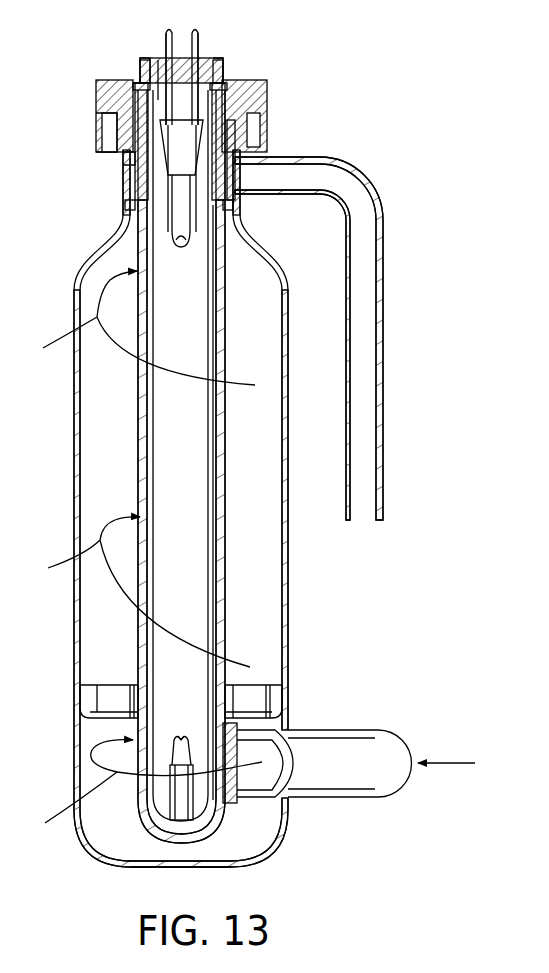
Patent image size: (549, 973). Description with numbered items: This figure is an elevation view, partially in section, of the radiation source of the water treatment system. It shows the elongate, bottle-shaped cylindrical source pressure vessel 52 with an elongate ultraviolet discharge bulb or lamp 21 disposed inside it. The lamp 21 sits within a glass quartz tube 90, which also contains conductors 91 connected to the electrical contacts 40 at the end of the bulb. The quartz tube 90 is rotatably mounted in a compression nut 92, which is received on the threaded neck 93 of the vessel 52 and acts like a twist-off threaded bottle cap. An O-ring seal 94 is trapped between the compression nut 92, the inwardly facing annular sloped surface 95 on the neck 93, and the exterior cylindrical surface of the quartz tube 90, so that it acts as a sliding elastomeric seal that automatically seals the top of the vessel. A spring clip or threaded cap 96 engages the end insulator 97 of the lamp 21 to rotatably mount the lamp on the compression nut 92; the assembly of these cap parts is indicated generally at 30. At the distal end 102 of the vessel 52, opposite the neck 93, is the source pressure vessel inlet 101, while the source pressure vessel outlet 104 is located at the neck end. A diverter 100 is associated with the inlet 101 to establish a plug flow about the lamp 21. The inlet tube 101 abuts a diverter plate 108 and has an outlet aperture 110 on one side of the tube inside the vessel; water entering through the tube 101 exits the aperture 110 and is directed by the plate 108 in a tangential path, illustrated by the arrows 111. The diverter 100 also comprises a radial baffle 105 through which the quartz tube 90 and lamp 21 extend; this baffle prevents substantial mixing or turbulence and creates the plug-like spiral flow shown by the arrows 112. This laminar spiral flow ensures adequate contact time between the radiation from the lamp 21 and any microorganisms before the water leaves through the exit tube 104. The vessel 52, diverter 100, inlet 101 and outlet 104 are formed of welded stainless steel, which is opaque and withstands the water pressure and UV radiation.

The ultraviolet discharge bulb or lamp 21 is at (192, 606).
The cap assembly 30 is at (271, 83).
The electrical contacts 40 is at (200, 33).
The source pressure vessel 52 is at (82, 272).
The glass quartz tube 90 is at (224, 590).
The conductors 91 is at (213, 660).
The compression nut 92 is at (267, 103).
The threaded neck 93 is at (120, 160).
The O-ring seal 94 is at (133, 83).
The inwardly facing annular sloped surface 95 is at (98, 128).
The spring clip or threaded cap 96 is at (220, 62).
The end insulator 97 is at (158, 60).
The diverter 100 is at (316, 703).
The source pressure vessel inlet 101 is at (380, 730).
The end 102 is at (193, 864).
The source pressure vessel outlet 104 is at (315, 157).
The radial baffle 105 is at (90, 692).
The diverter plate 108 is at (240, 795).
The outlet aperture 110 is at (265, 775).
The arrows 111 is at (145, 798).
The arrows 112 is at (141, 469).